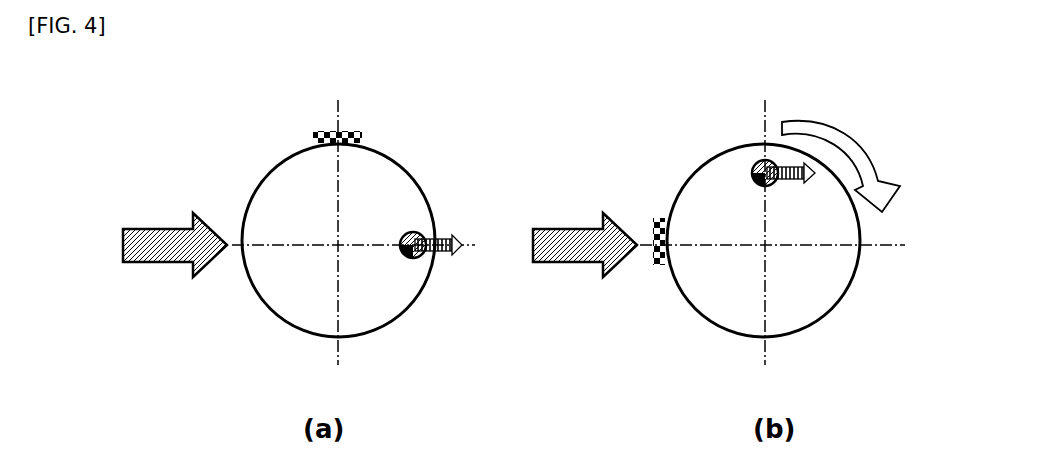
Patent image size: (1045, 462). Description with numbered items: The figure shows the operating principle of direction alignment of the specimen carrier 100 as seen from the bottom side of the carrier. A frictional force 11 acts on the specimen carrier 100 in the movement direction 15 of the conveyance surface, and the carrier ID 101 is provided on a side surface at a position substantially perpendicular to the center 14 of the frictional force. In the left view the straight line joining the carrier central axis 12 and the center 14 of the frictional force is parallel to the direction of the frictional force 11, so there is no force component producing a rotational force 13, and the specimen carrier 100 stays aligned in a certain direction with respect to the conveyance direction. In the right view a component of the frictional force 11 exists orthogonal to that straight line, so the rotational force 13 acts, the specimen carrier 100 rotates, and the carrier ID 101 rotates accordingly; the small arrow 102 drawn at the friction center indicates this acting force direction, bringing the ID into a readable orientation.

The specimen carrier 100 is at (278, 163).
The carrier ID 101 is at (327, 130).
The moving direction 102 is at (420, 230).
The frictional force 11 is at (440, 257).
The carrier central axis 12 is at (338, 243).
The rotational force 13 is at (835, 127).
The center of the frictional force 14 is at (410, 258).
The movement direction 15 is at (178, 263).